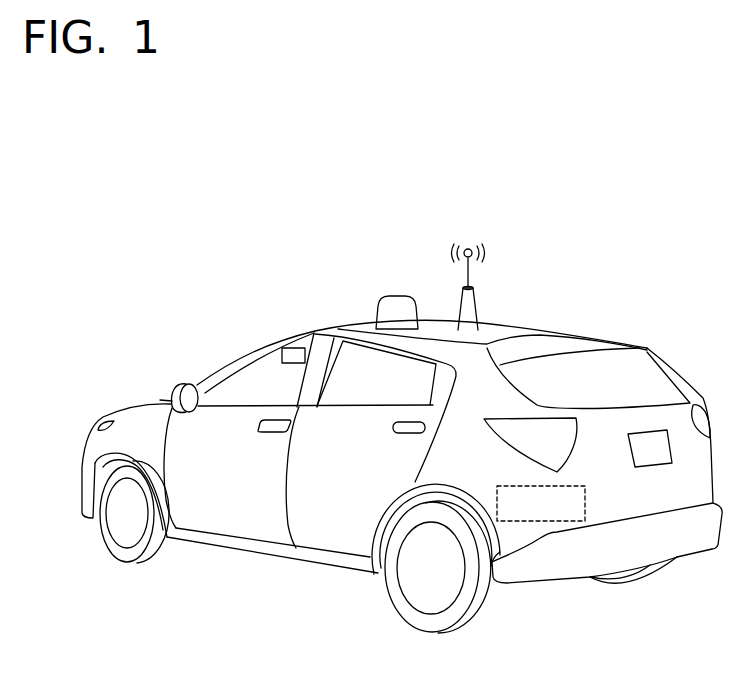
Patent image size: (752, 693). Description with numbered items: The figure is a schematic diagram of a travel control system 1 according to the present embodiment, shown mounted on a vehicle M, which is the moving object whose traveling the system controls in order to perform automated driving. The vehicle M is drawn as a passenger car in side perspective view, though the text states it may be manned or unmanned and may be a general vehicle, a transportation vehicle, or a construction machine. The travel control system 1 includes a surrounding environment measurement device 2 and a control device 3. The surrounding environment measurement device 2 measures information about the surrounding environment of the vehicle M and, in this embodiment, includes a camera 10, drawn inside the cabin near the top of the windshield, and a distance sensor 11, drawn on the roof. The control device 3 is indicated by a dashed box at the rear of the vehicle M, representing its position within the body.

The travel control system 1 is at (228, 171).
The vehicle M is at (223, 326).
The surrounding environment measurement device 2 is at (412, 233).
The camera 10 is at (293, 348).
The distance sensor 11 is at (398, 297).
The control device 3 is at (539, 522).